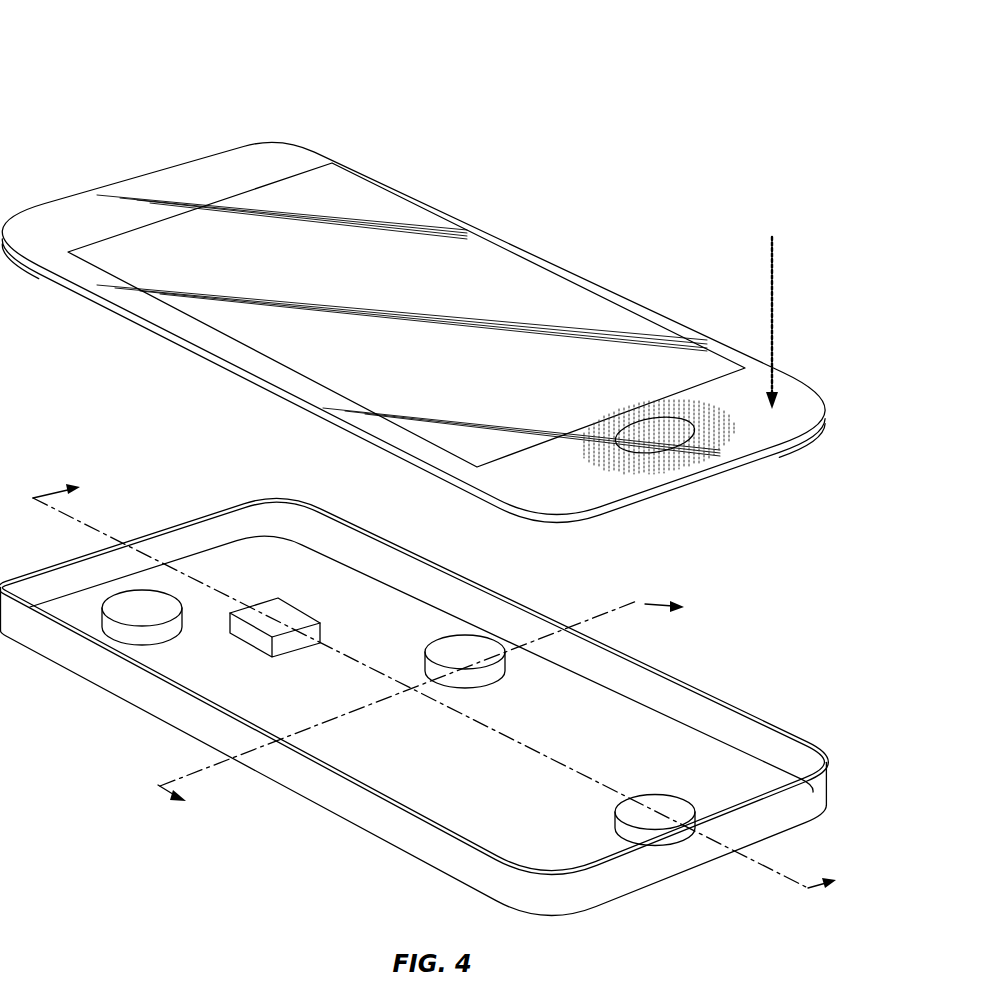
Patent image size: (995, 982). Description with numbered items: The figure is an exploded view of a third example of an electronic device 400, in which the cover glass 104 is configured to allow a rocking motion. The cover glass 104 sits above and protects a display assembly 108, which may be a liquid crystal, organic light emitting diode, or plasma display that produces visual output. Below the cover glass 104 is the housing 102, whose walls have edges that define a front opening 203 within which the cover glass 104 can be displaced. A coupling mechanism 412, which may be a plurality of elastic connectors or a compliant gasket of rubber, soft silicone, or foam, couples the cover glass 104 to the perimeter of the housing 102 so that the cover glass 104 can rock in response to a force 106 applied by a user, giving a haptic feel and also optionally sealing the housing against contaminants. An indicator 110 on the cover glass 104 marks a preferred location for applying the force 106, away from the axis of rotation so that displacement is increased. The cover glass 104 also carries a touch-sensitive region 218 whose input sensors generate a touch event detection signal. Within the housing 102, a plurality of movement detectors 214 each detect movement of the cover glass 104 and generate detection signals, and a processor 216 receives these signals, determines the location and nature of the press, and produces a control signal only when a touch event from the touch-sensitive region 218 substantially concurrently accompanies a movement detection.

The electronic device 400 is at (53, 90).
The cover glass 104 is at (267, 144).
The display assembly 108 is at (385, 212).
The force 106 is at (773, 258).
The indicator 110 is at (677, 454).
The touch-sensitive region 218 is at (636, 473).
The coupling mechanism 412 is at (193, 516).
The front opening 203 is at (684, 680).
The housing 102 is at (828, 808).
The movement detectors 214 is at (120, 634).
The processor 216 is at (247, 637).